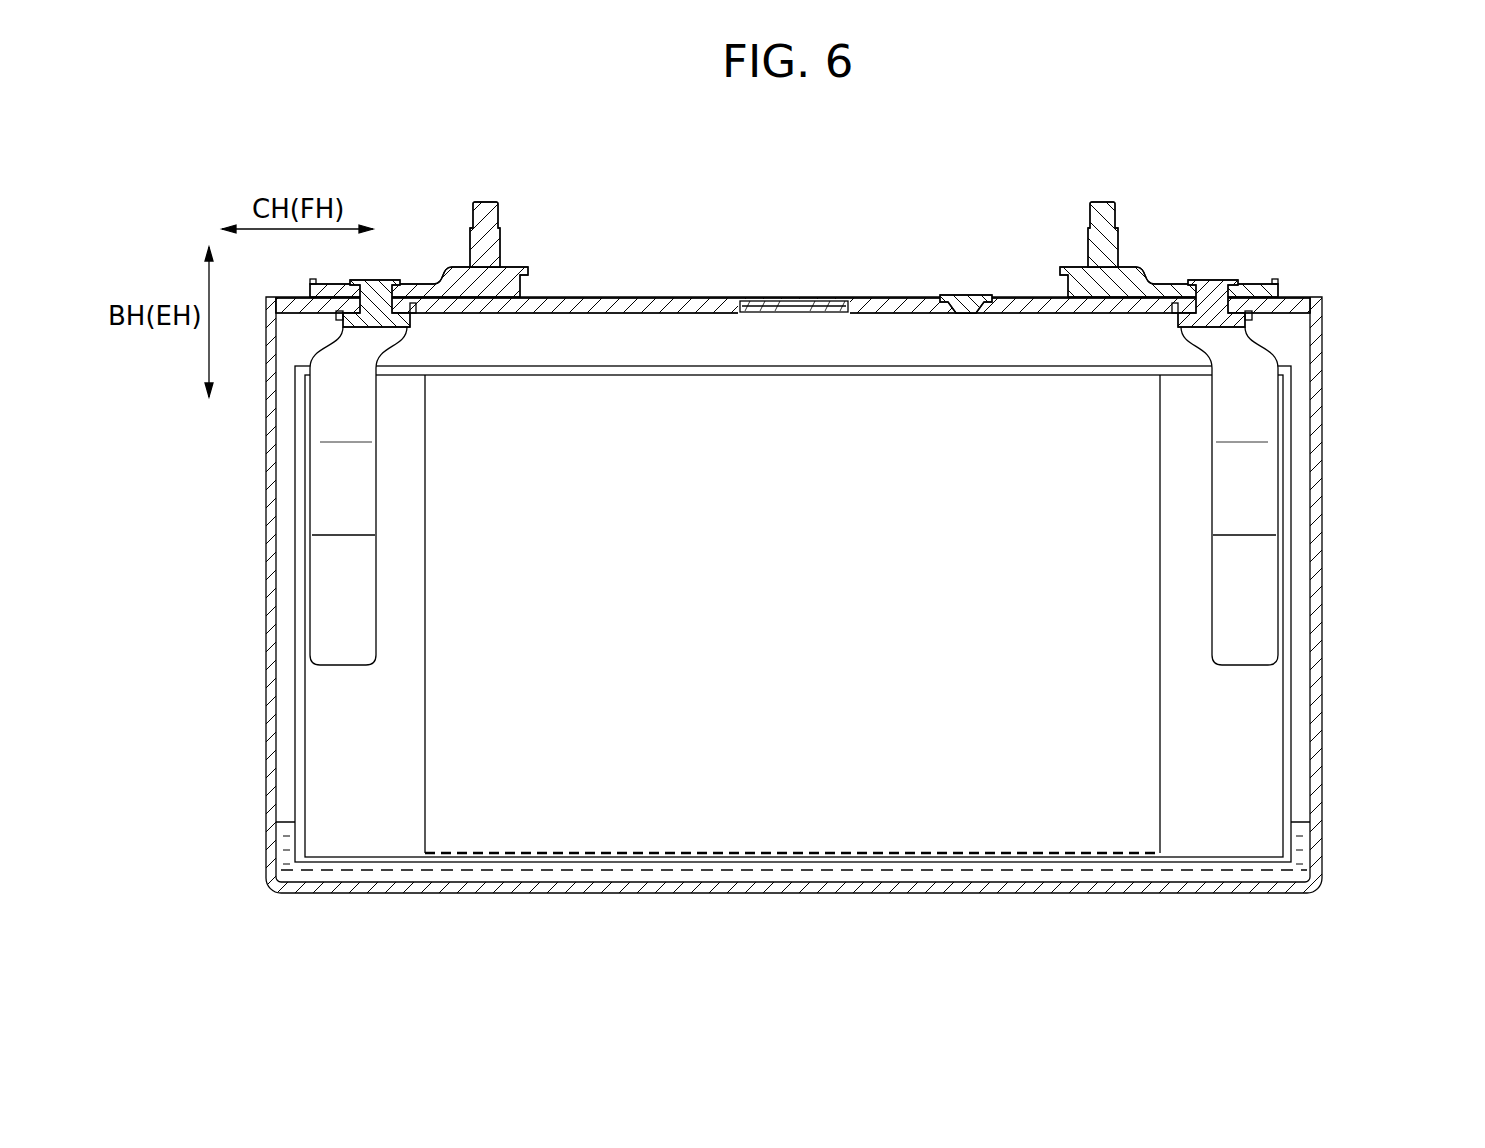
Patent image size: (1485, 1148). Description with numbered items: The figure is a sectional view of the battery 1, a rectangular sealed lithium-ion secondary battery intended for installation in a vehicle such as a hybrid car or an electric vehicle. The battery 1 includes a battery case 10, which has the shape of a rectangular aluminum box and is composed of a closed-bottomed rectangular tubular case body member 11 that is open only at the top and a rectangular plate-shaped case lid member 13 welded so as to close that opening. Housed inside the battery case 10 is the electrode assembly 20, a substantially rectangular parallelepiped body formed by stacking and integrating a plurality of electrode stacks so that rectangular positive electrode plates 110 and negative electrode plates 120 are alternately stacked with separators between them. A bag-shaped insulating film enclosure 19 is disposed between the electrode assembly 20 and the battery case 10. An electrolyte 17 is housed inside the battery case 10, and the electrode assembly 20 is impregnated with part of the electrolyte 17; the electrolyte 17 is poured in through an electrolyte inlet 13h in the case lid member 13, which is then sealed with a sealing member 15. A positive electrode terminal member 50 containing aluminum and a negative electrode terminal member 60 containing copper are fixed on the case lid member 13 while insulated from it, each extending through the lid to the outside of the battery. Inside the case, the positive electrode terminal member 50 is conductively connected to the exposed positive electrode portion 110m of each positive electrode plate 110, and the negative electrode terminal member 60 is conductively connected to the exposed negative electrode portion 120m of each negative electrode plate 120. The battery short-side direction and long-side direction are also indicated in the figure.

The battery 1 is at (1248, 234).
The battery case 10 is at (791, 589).
The case body member 11 is at (523, 890).
The case lid member 13 is at (660, 298).
The electrolyte inlet 13h is at (962, 316).
The sealing member 15 is at (970, 296).
The electrolyte 17 is at (750, 800).
The insulating film enclosure 19 is at (866, 368).
The electrode assembly 20 is at (1103, 812).
The positive electrode terminal member 50 is at (440, 258).
The negative electrode terminal member 60 is at (1148, 258).
The positive electrode plate 110 is at (253, 517).
The exposed positive electrode portion 110m is at (323, 707).
The negative electrode plate 120 is at (1331, 522).
The exposed negative electrode portion 120m is at (1268, 718).